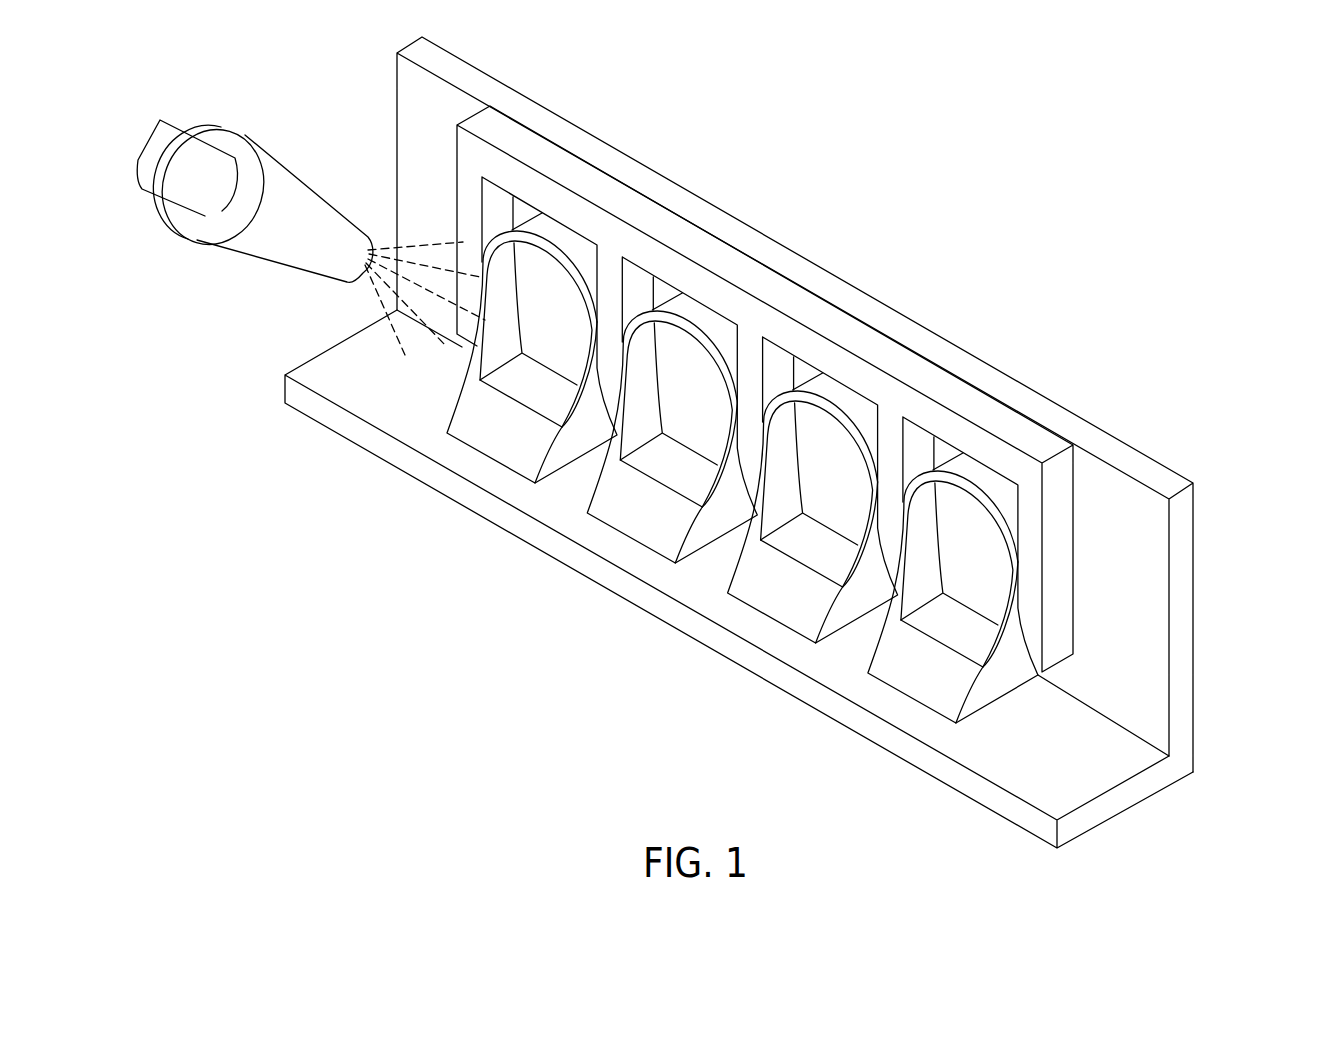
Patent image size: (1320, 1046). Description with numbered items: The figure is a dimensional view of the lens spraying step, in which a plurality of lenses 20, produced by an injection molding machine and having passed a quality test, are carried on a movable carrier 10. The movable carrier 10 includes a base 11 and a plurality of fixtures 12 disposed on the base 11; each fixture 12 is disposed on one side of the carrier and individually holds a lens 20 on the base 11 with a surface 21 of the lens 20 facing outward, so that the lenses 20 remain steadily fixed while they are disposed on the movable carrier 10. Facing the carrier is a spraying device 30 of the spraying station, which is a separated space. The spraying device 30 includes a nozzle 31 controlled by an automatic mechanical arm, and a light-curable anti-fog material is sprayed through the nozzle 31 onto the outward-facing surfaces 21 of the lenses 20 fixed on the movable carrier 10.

The movable carrier 10 is at (770, 442).
The base 11 is at (1142, 567).
The fixture 12 is at (1065, 507).
The lens 20 is at (851, 468).
The surface 21 is at (983, 567).
The spraying device 30 is at (311, 208).
The nozzle 31 is at (295, 188).